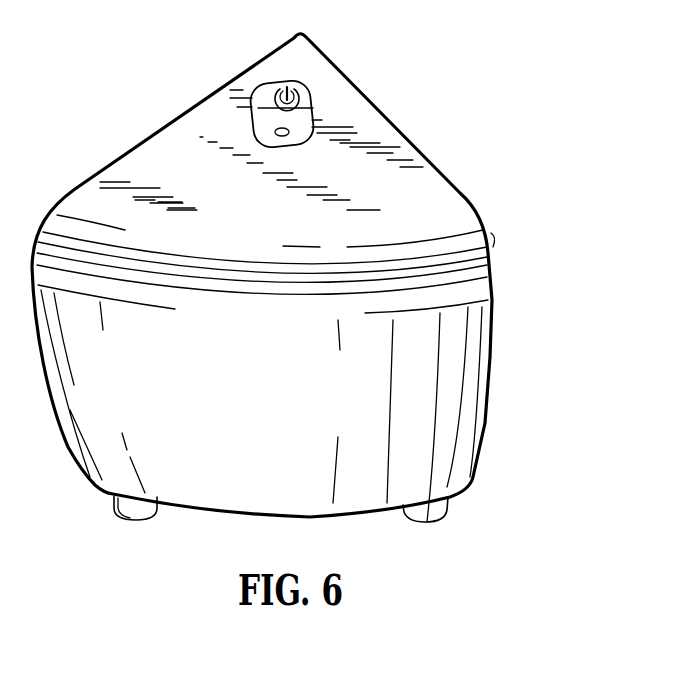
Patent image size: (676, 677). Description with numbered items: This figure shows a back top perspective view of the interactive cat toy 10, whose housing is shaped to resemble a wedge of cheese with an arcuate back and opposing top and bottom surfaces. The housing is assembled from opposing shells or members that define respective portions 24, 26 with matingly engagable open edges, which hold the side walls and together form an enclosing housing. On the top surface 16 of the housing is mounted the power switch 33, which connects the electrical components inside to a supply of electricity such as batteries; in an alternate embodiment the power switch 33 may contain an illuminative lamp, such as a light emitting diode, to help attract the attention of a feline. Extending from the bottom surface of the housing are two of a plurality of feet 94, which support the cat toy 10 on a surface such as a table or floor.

The interactive cat toy 10 is at (137, 88).
The top surface 16 is at (390, 167).
The power switch 33 is at (302, 120).
The housing portion 26 is at (453, 321).
The housing portion 24 is at (437, 450).
The feet 94 is at (143, 518).